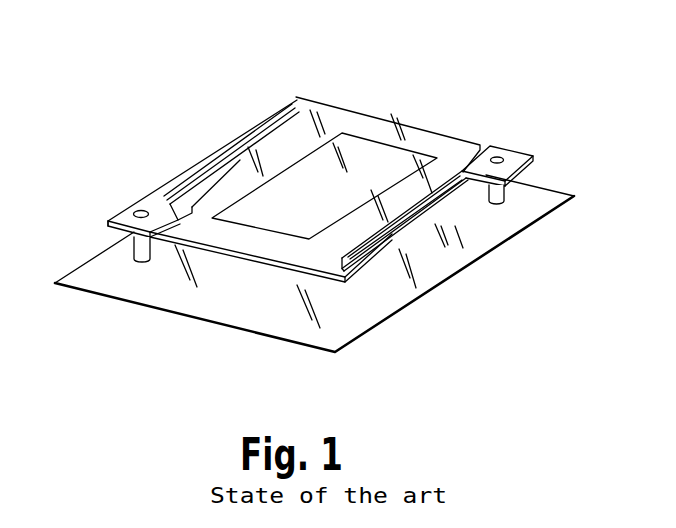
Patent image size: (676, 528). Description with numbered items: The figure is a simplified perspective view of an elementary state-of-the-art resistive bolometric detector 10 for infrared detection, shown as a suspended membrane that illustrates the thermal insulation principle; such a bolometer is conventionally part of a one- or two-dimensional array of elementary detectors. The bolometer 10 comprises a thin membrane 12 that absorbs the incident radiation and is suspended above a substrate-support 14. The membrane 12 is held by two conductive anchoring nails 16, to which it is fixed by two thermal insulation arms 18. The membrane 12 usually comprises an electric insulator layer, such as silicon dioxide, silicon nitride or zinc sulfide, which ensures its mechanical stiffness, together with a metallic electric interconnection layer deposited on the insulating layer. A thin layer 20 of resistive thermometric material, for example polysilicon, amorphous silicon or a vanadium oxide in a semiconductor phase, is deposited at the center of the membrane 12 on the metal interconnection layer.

The resistive bolometric detector 10 is at (313, 46).
The thin membrane 12 is at (448, 143).
The substrate-support 14 is at (375, 288).
The conductive anchoring nails 16 is at (137, 248).
The thermal insulation arms 18 is at (196, 165).
The thin layer of resistive thermometric material 20 is at (369, 159).